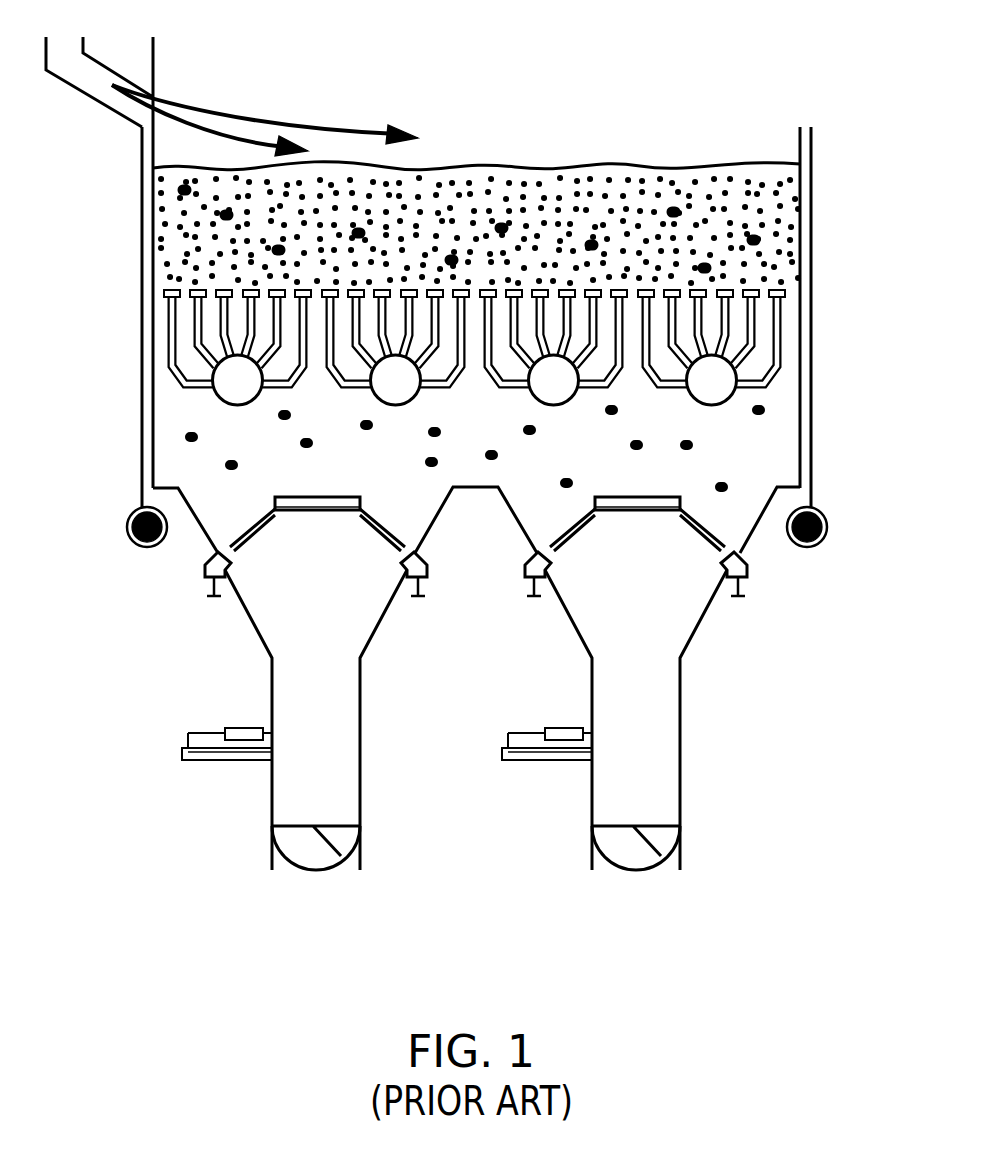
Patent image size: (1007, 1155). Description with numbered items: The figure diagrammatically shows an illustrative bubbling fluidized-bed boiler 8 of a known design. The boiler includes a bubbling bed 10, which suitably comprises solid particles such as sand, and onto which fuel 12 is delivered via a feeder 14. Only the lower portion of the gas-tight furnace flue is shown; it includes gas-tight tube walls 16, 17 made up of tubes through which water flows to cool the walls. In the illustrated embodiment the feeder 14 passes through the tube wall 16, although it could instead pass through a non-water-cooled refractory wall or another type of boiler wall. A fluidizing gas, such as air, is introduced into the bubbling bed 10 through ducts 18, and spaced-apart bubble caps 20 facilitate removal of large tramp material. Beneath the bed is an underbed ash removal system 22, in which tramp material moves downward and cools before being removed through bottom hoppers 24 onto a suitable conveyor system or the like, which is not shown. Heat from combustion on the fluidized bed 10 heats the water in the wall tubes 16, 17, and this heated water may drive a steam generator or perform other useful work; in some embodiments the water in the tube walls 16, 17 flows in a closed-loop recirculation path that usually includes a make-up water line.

The bubbling fluidized-bed boiler 8 is at (235, 628).
The bubbling bed 10 is at (466, 178).
The fuel 12 is at (200, 127).
The feeder 14 is at (103, 62).
The tube wall 16 is at (142, 435).
The tube wall 17 is at (808, 406).
The ducts 18 is at (402, 388).
The bubble caps 20 is at (199, 317).
The underbed ash removal system 22 is at (643, 533).
The bottom hoppers 24 is at (361, 718).